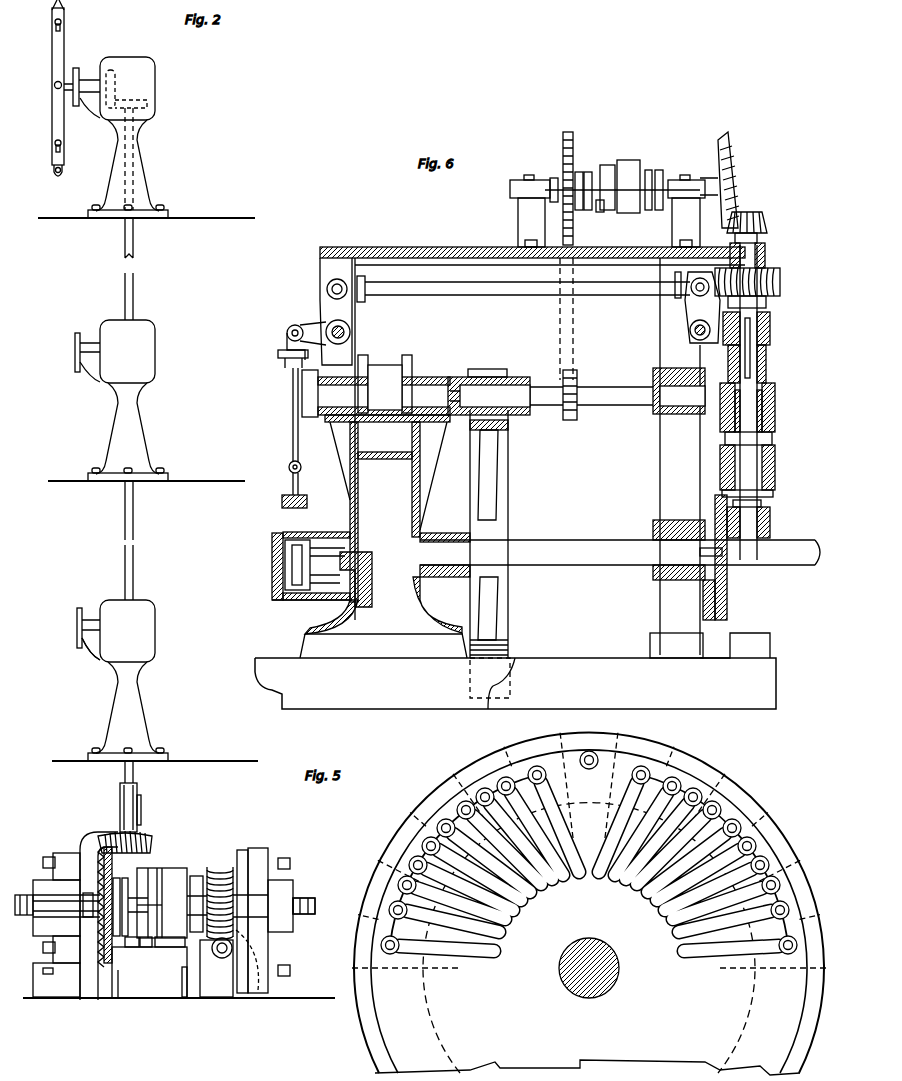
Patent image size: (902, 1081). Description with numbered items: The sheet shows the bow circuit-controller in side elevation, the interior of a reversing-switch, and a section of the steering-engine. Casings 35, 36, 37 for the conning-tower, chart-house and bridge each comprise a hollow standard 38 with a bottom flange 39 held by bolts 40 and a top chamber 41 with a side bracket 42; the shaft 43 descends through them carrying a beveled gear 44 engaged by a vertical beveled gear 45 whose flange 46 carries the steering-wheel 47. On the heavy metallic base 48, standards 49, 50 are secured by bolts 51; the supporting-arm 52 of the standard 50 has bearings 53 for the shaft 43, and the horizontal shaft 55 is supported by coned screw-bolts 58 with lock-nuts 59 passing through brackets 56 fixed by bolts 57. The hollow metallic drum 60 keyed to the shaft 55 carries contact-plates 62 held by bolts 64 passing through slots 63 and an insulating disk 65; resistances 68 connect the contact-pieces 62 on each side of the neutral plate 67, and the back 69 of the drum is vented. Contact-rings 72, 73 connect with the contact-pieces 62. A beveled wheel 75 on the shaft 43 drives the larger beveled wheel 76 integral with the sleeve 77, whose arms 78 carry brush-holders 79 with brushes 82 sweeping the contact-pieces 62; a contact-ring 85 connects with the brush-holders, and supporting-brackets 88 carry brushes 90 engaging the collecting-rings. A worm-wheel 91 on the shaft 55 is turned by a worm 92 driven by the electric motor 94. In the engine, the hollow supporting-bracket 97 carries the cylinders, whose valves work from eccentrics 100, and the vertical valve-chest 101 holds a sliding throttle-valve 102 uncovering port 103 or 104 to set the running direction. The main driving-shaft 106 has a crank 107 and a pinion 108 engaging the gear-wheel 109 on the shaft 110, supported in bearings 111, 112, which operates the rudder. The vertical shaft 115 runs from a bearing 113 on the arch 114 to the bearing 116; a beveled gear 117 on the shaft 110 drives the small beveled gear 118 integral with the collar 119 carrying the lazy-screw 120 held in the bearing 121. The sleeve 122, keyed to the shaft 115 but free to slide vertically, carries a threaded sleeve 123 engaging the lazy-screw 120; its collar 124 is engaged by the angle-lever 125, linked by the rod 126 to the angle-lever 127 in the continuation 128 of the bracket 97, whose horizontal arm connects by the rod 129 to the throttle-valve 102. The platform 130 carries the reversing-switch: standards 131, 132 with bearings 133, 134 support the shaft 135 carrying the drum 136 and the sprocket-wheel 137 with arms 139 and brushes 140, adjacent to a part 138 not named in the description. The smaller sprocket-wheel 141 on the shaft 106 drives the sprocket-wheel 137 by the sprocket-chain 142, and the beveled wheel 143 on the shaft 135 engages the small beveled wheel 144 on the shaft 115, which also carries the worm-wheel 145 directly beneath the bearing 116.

In FIG. 2, the casing 35 is at (146, 708).
In FIG. 2, the casing 36 is at (135, 425).
In FIG. 2, the casing 37 is at (137, 170).
In FIG. 2, the hollow standard 38 is at (140, 680).
In FIG. 2, the flange 39 is at (168, 760).
In FIG. 2, the bolts 40 is at (92, 752).
In FIG. 2, the chamber 41 is at (127, 631).
In FIG. 2, the bracket 42 is at (95, 643).
In FIG. 2, the shaft 43 is at (133, 578).
In FIG. 2, the beveled gear 44 is at (135, 105).
In FIG. 2, the vertical beveled gear 45 is at (112, 82).
In FIG. 2, the flange 46 is at (79, 72).
In FIG. 2, the steering-wheel 47 is at (62, 45).
In FIG. 2, the heavy metallic base 48 is at (172, 1001).
In FIG. 2, the standard 49 is at (262, 850).
In FIG. 2, the standard 50 is at (75, 840).
In FIG. 2, the bolts 51 is at (290, 970).
In FIG. 2, the supporting-arm 52 is at (68, 838).
In FIG. 2, the bearings 53 is at (141, 805).
In FIG. 2, the horizontal shaft 55 is at (242, 850).
In FIG. 2, the bracket 56 is at (40, 893).
In FIG. 2, the bolts 57 is at (43, 862).
In FIG. 2, the screw-bolts 58 is at (317, 903).
In FIG. 2, the lock-nuts 59 is at (22, 916).
In FIG. 2, the hollow metallic drum 60 is at (163, 893).
In FIG. 5, the hollow metallic drum 60 is at (538, 1003).
In FIG. 5, the contact-plates 62 is at (405, 830).
In FIG. 5, the slots 63 is at (510, 772).
In FIG. 5, the bolts 64 is at (410, 948).
In FIG. 5, the disk of insulating material 65 is at (620, 968).
In FIG. 5, the neutral plate 67 is at (589, 751).
In FIG. 5, the resistances 68 is at (589, 938).
In FIG. 2, the back of the drum 69 is at (170, 868).
In FIG. 2, the contact-ring 72 is at (194, 874).
In FIG. 2, the contact-ring 73 is at (208, 865).
In FIG. 2, the beveled wheel 75 is at (150, 838).
In FIG. 2, the larger beveled wheel 76 is at (108, 862).
In FIG. 2, the sleeve 77 is at (150, 898).
In FIG. 2, the arms 78 is at (160, 918).
In FIG. 2, the brush-holder 79 is at (147, 947).
In FIG. 2, the brush 82 is at (168, 947).
In FIG. 2, the contact-ring 85 is at (130, 948).
In FIG. 2, the supporting-brackets 88 is at (125, 988).
In FIG. 2, the brushes 90 is at (128, 940).
In FIG. 2, the worm-wheel 91 is at (218, 866).
In FIG. 2, the worm 92 is at (222, 958).
In FIG. 2, the electric motor 94 is at (184, 972).
In FIG. 6, the hollow supporting-bracket 97 is at (387, 524).
In FIG. 6, the eccentrics 100 is at (302, 397).
In FIG. 6, the vertical valve-chest 101 is at (340, 598).
In FIG. 6, the sliding throttle-valve 102 is at (290, 570).
In FIG. 6, the port 103 is at (325, 540).
In FIG. 6, the port 104 is at (333, 578).
In FIG. 6, the main driving-shaft 106 is at (612, 396).
In FIG. 6, the crank 107 is at (405, 370).
In FIG. 6, the pinion 108 is at (505, 371).
In FIG. 6, the gear-wheel 109 is at (500, 472).
In FIG. 6, the shaft 110 is at (560, 540).
In FIG. 6, the bearing 111 is at (450, 585).
In FIG. 6, the bearing 112 is at (672, 582).
In FIG. 6, the bearing 113 is at (771, 520).
In FIG. 6, the arch 114 is at (727, 600).
In FIG. 6, the vertical shaft 115 is at (768, 370).
In FIG. 6, the bearing 116 is at (766, 255).
In FIG. 6, the beveled gear 117 is at (712, 590).
In FIG. 6, the small beveled gear 118 is at (774, 490).
In FIG. 6, the collar 119 is at (772, 437).
In FIG. 6, the lazy-screw 120 is at (775, 405).
In FIG. 6, the bearing 121 is at (776, 463).
In FIG. 6, the sleeve 122 is at (767, 352).
In FIG. 6, the sleeve 123 is at (768, 390).
In FIG. 6, the collar 124 is at (772, 328).
In FIG. 6, the angle-lever 125 is at (690, 310).
In FIG. 6, the rod 126 is at (583, 283).
In FIG. 6, the angle-lever 127 is at (352, 312).
In FIG. 6, the continuation of the standard 128 is at (345, 352).
In FIG. 6, the rod 129 is at (293, 378).
In FIG. 6, the platform 130 is at (460, 247).
In FIG. 6, the standard 131 is at (532, 222).
In FIG. 6, the standard 132 is at (686, 222).
In FIG. 6, the bearing 133 is at (510, 184).
In FIG. 6, the bearing 134 is at (680, 178).
In FIG. 6, the shaft 135 is at (553, 178).
In FIG. 6, the drum 136 is at (635, 162).
In FIG. 6, the sprocket-wheel 137 is at (568, 135).
In FIG. 6, the sprocket 138 is at (582, 172).
In FIG. 6, the arms 139 is at (608, 165).
In FIG. 6, the brushes 140 is at (605, 205).
In FIG. 6, the smaller sprocket-wheel 141 is at (578, 378).
In FIG. 6, the sprocket-chain 142 is at (573, 330).
In FIG. 6, the beveled wheel 143 is at (736, 186).
In FIG. 6, the small beveled wheel 144 is at (766, 218).
In FIG. 6, the worm-wheel 145 is at (781, 283).